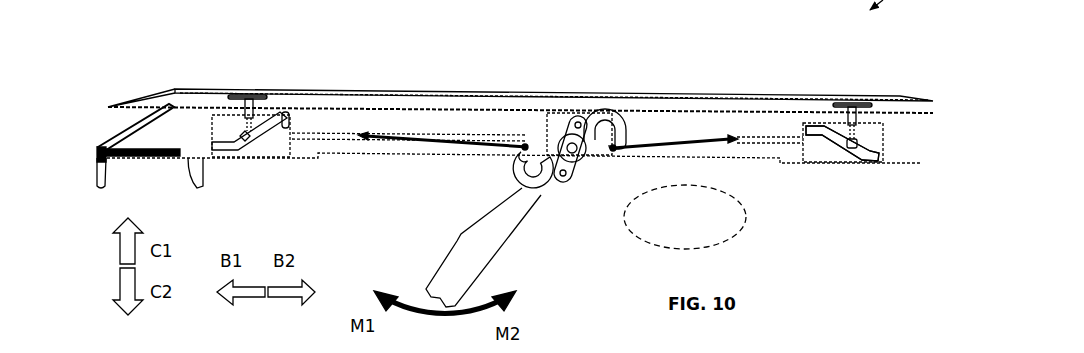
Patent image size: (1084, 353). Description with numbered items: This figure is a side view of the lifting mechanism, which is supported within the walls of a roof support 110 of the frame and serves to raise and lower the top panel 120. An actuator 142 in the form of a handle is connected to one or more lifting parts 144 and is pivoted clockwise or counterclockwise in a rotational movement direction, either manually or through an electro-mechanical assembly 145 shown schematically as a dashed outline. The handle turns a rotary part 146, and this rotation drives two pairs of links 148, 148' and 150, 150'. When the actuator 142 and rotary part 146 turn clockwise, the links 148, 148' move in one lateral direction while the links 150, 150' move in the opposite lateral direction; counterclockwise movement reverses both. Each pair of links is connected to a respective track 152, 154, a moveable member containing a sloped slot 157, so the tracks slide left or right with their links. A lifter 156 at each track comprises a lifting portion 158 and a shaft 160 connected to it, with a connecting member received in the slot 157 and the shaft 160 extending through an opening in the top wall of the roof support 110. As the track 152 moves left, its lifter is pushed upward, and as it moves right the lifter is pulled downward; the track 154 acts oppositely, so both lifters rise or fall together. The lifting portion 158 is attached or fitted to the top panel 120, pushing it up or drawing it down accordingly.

The roof support 110 is at (369, 106).
The top panel 120 is at (705, 95).
The actuator 142 is at (487, 226).
The lifting part 144 is at (210, 42).
The electro-mechanical assembly 145 is at (685, 217).
The rotary part 146 is at (558, 112).
The link 148 is at (491, 175).
The link 148' is at (443, 90).
The link 150 is at (605, 80).
The link 150' is at (674, 94).
The track 152 is at (270, 140).
The track 154 is at (817, 150).
The lifter 156 is at (267, 75).
The slot 157 is at (285, 115).
The lifting portion 158 is at (253, 95).
The shaft 160 is at (210, 118).